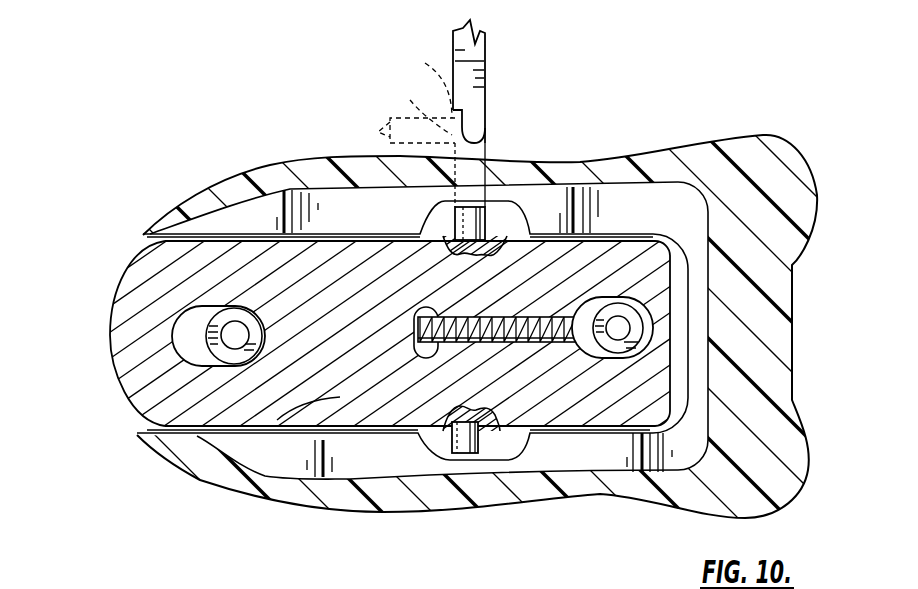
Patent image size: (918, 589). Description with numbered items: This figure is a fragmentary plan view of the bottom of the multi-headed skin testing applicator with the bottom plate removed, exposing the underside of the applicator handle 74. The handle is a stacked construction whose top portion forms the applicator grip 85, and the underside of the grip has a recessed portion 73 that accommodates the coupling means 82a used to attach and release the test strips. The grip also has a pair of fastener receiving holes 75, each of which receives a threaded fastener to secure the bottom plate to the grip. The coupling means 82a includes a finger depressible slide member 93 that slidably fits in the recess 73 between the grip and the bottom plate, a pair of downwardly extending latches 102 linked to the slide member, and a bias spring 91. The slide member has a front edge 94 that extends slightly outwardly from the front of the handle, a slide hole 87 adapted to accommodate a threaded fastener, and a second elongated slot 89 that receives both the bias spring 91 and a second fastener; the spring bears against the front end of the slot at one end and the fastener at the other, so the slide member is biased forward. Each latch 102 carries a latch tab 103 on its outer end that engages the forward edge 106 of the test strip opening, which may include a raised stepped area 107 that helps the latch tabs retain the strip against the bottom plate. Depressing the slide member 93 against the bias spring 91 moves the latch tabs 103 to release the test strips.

The recessed portion 73 is at (682, 270).
The applicator handle 74 is at (790, 160).
The fastener receiving holes 75 is at (264, 322).
The coupling means 82a is at (478, 88).
The applicator grip 85 is at (778, 478).
The slide hole 87 is at (185, 353).
The slot 89 is at (553, 342).
The bias spring 91 is at (497, 330).
The slide member 93 is at (266, 345).
The front edge 94 is at (123, 393).
The latches 102 is at (482, 50).
The latch tab 103 is at (474, 133).
The forward edge 106 is at (422, 77).
The raised stepped area 107 is at (416, 110).